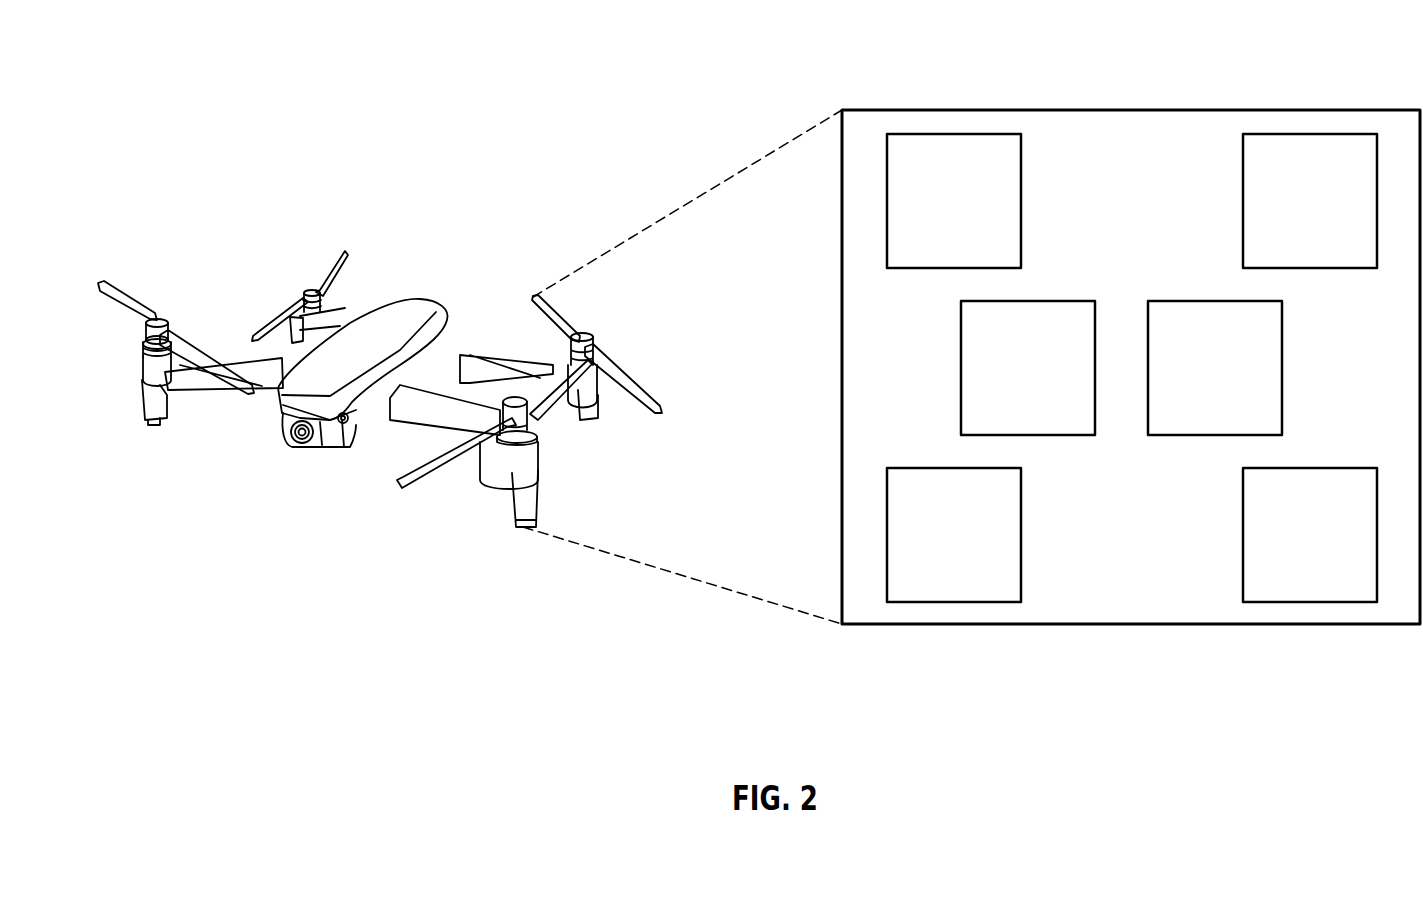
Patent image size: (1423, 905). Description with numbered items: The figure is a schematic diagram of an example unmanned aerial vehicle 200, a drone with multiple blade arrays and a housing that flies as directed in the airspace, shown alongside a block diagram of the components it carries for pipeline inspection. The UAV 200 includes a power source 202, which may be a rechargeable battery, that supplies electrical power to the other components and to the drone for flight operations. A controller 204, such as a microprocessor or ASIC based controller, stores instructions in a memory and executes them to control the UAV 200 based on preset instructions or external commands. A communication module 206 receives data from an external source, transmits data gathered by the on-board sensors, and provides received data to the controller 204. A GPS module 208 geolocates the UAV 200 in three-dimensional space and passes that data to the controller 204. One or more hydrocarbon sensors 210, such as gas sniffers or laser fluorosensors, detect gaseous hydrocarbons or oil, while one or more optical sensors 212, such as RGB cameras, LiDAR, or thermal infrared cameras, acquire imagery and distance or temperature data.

The unmanned aerial vehicle 200 is at (178, 72).
The power source 202 is at (1191, 380).
The controller 204 is at (1004, 380).
The communication module 206 is at (1285, 214).
The GPS module 208 is at (929, 214).
The hydrocarbon sensor 210 is at (1285, 547).
The optical sensor 212 is at (929, 547).